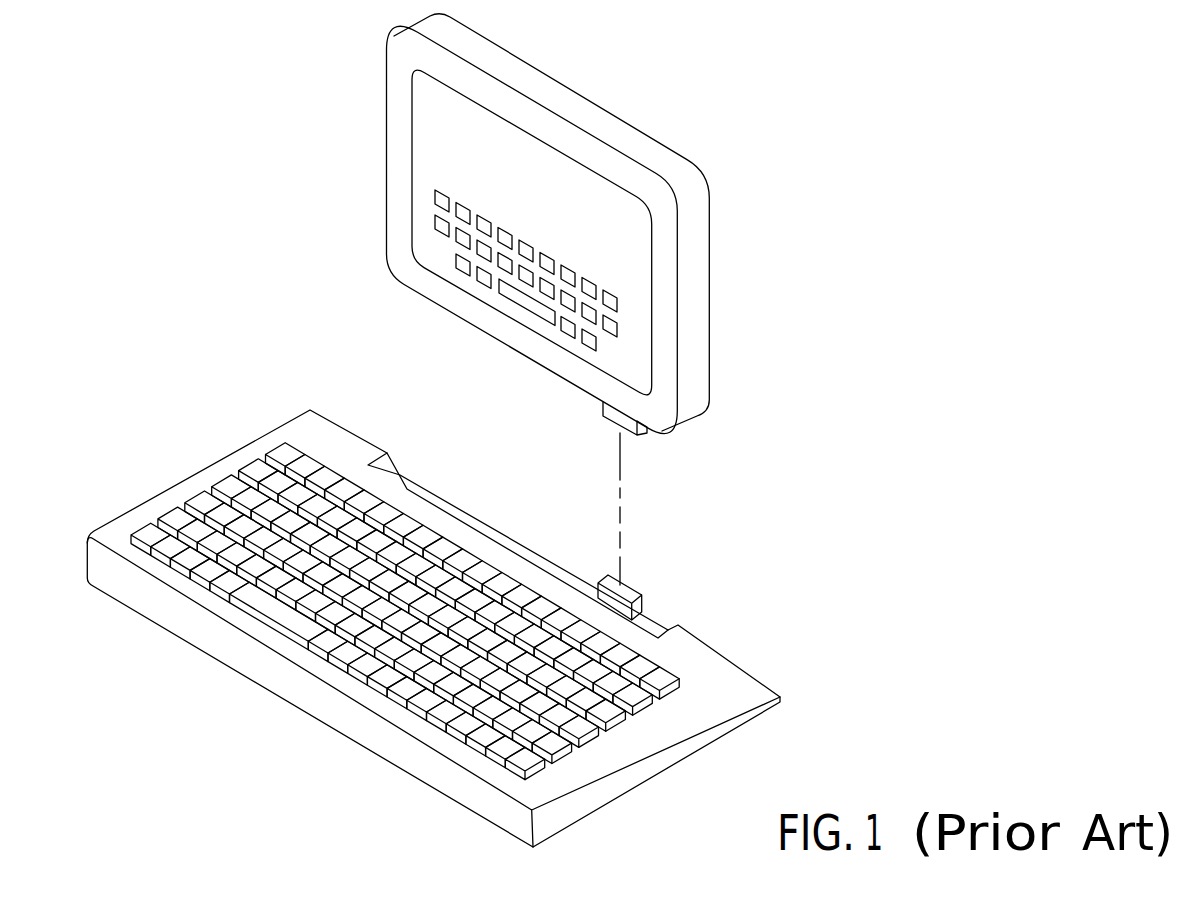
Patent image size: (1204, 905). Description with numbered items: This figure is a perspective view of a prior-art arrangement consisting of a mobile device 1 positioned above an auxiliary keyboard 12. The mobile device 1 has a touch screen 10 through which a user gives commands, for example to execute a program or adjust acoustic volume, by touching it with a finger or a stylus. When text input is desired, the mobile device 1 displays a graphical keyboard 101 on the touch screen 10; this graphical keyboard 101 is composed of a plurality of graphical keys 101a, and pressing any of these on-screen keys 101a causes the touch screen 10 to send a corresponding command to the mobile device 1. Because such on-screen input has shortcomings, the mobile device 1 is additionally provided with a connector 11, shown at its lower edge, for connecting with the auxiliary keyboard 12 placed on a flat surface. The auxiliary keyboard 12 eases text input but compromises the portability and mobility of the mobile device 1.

The mobile device 1 is at (711, 77).
The touch screen 10 is at (620, 243).
The graphical keyboard 101 is at (420, 203).
The graphical keys 101a is at (591, 343).
The connector 11 is at (613, 414).
The auxiliary keyboard 12 is at (708, 665).